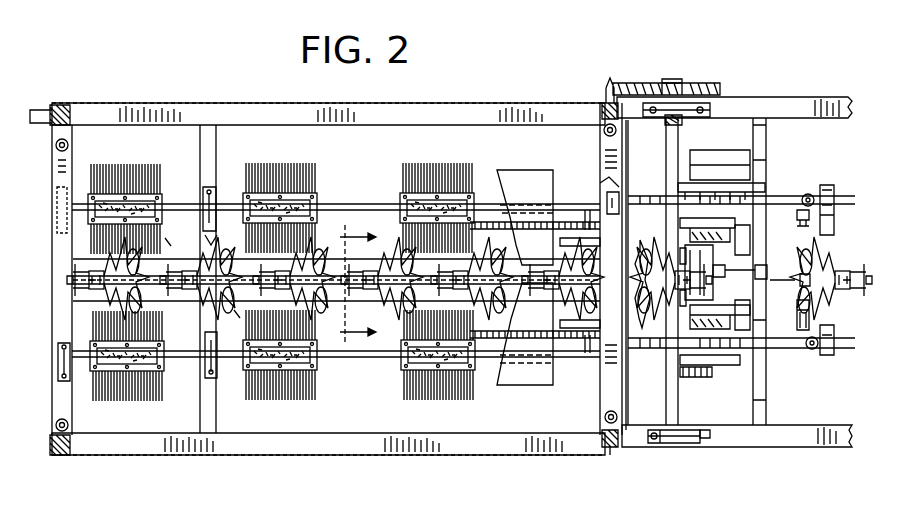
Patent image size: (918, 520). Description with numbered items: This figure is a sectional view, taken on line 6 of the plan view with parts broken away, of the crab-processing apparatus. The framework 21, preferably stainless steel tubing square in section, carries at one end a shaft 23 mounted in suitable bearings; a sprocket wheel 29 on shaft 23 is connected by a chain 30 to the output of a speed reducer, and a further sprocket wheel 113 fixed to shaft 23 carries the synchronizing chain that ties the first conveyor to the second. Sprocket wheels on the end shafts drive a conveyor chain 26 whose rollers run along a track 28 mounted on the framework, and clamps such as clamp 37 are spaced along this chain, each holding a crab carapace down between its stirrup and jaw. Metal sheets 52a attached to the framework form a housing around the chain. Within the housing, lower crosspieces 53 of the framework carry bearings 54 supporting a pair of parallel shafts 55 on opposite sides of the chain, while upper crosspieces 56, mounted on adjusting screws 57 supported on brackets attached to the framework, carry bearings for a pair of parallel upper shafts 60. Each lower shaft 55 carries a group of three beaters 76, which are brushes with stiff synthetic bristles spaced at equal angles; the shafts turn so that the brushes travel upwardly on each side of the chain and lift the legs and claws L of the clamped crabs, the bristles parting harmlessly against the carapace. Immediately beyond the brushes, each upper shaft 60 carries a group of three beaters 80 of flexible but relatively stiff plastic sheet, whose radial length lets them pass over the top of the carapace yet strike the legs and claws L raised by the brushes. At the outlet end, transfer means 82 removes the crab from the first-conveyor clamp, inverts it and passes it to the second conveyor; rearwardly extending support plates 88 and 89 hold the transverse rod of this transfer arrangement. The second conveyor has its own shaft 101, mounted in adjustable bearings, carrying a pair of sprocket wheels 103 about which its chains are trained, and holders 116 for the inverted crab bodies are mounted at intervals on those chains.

The framework 21 is at (253, 123).
The metal sheets 52a is at (342, 107).
The upper crosspieces 56 is at (68, 172).
The adjusting screws 57 is at (72, 122).
The lower crosspieces 53 is at (216, 157).
The bearings 54 is at (210, 196).
The shafts 55 is at (344, 205).
The beaters 76 is at (140, 177).
The section line 6 is at (348, 285).
The legs and claws L is at (202, 277).
The conveyor chain 26 is at (389, 271).
The track 28 is at (505, 255).
The beaters 80 is at (535, 180).
The shafts 60 is at (583, 217).
The chain 30 is at (626, 86).
The sprocket wheel 29 is at (686, 81).
The shaft 23 is at (680, 152).
The shaft 101 is at (663, 410).
The support plate 89 is at (707, 184).
The sprocket wheels 103 is at (707, 197).
The holders 116 is at (815, 186).
The clamp 37 is at (627, 338).
The support plate 88 is at (730, 360).
The sprocket wheel 113 is at (690, 372).
The transfer means 82 is at (784, 365).